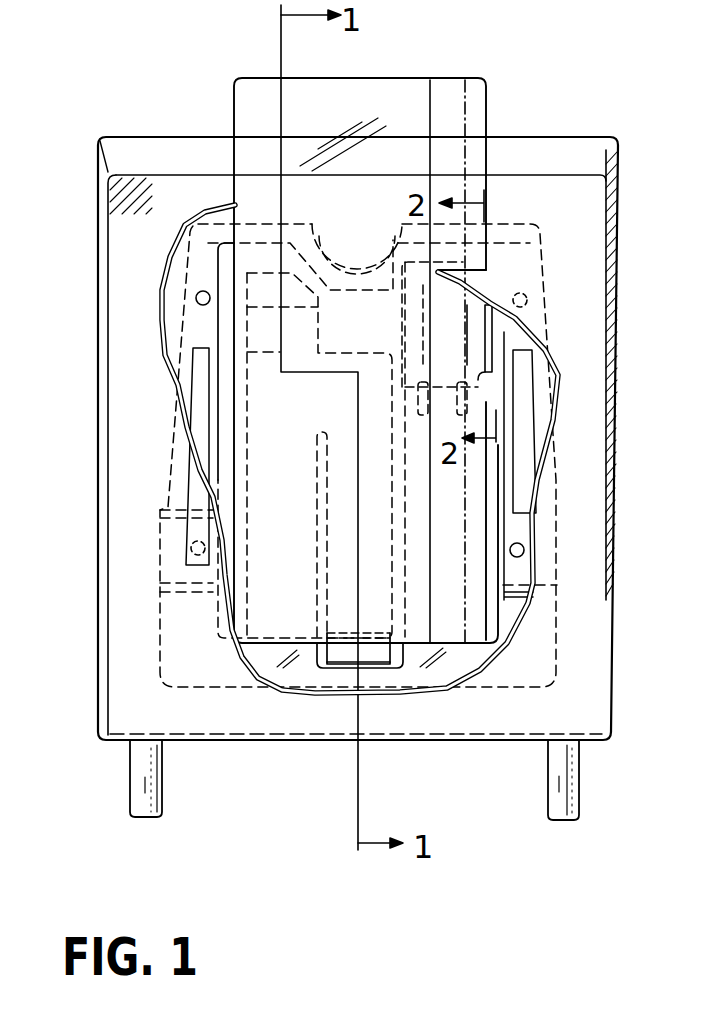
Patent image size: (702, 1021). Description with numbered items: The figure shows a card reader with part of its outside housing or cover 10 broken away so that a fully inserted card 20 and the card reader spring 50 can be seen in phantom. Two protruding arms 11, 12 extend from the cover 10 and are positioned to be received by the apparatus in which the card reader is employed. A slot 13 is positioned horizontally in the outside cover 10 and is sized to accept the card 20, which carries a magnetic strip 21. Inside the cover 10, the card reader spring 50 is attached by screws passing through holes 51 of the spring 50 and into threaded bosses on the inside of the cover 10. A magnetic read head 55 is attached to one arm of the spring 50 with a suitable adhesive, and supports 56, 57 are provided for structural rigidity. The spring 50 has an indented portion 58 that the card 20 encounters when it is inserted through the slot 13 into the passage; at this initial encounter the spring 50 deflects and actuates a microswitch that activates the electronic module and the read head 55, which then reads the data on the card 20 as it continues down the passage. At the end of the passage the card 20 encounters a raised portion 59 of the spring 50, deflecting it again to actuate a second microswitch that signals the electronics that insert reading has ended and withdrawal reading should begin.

The outside housing or cover 10 is at (583, 137).
The protruding arm 11 is at (560, 822).
The protruding arm 12 is at (150, 818).
The slot 13 is at (489, 268).
The card 20 is at (486, 78).
The magnetic strip 21 is at (441, 93).
The card reader spring 50 is at (550, 380).
The holes 51 is at (196, 300).
The magnetic read head 55 is at (492, 335).
The support 56 is at (428, 425).
The support 57 is at (468, 440).
The indented portion 58 is at (267, 327).
The raised portion 59 is at (292, 706).